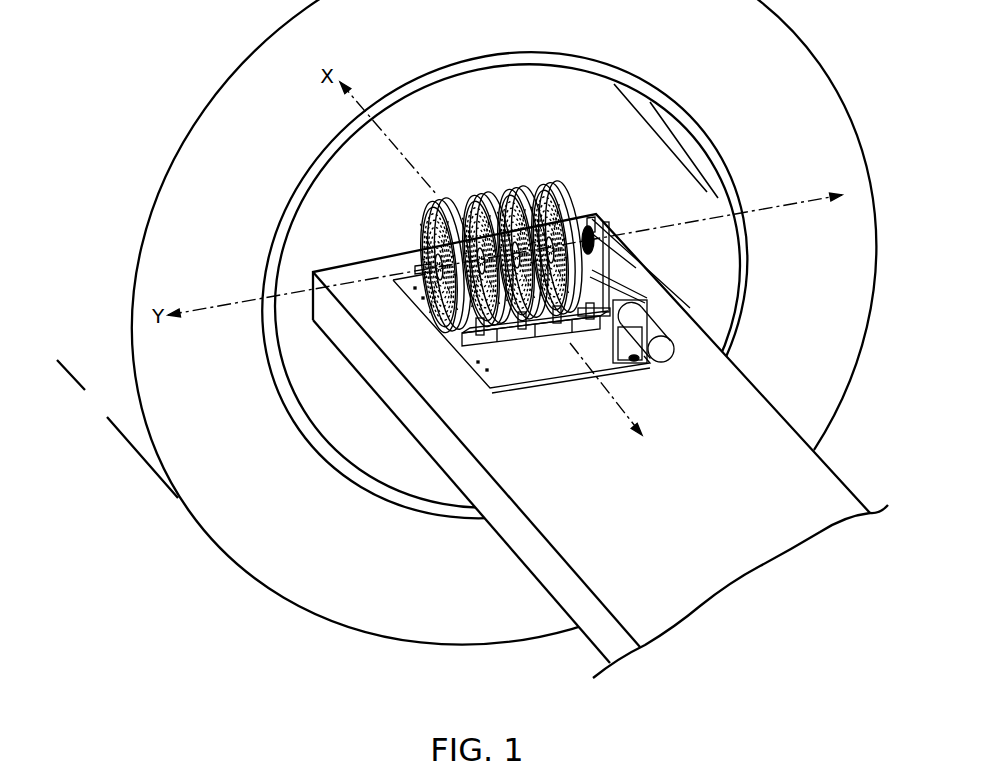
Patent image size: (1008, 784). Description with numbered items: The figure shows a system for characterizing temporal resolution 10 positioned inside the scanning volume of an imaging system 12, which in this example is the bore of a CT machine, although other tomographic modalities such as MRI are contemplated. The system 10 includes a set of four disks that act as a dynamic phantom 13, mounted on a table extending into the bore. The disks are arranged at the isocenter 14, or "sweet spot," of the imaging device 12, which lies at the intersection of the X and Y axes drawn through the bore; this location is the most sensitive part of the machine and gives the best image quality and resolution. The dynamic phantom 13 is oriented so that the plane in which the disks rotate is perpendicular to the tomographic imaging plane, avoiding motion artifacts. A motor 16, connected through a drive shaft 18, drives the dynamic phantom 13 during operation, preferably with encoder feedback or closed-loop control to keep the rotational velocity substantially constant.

The system for characterizing temporal resolution 10 is at (564, 201).
The imaging system 12 is at (787, 57).
The dynamic phantom 13 is at (428, 218).
The isocenter 14 is at (498, 235).
The motor 16 is at (656, 316).
The drive shaft 18 is at (606, 292).